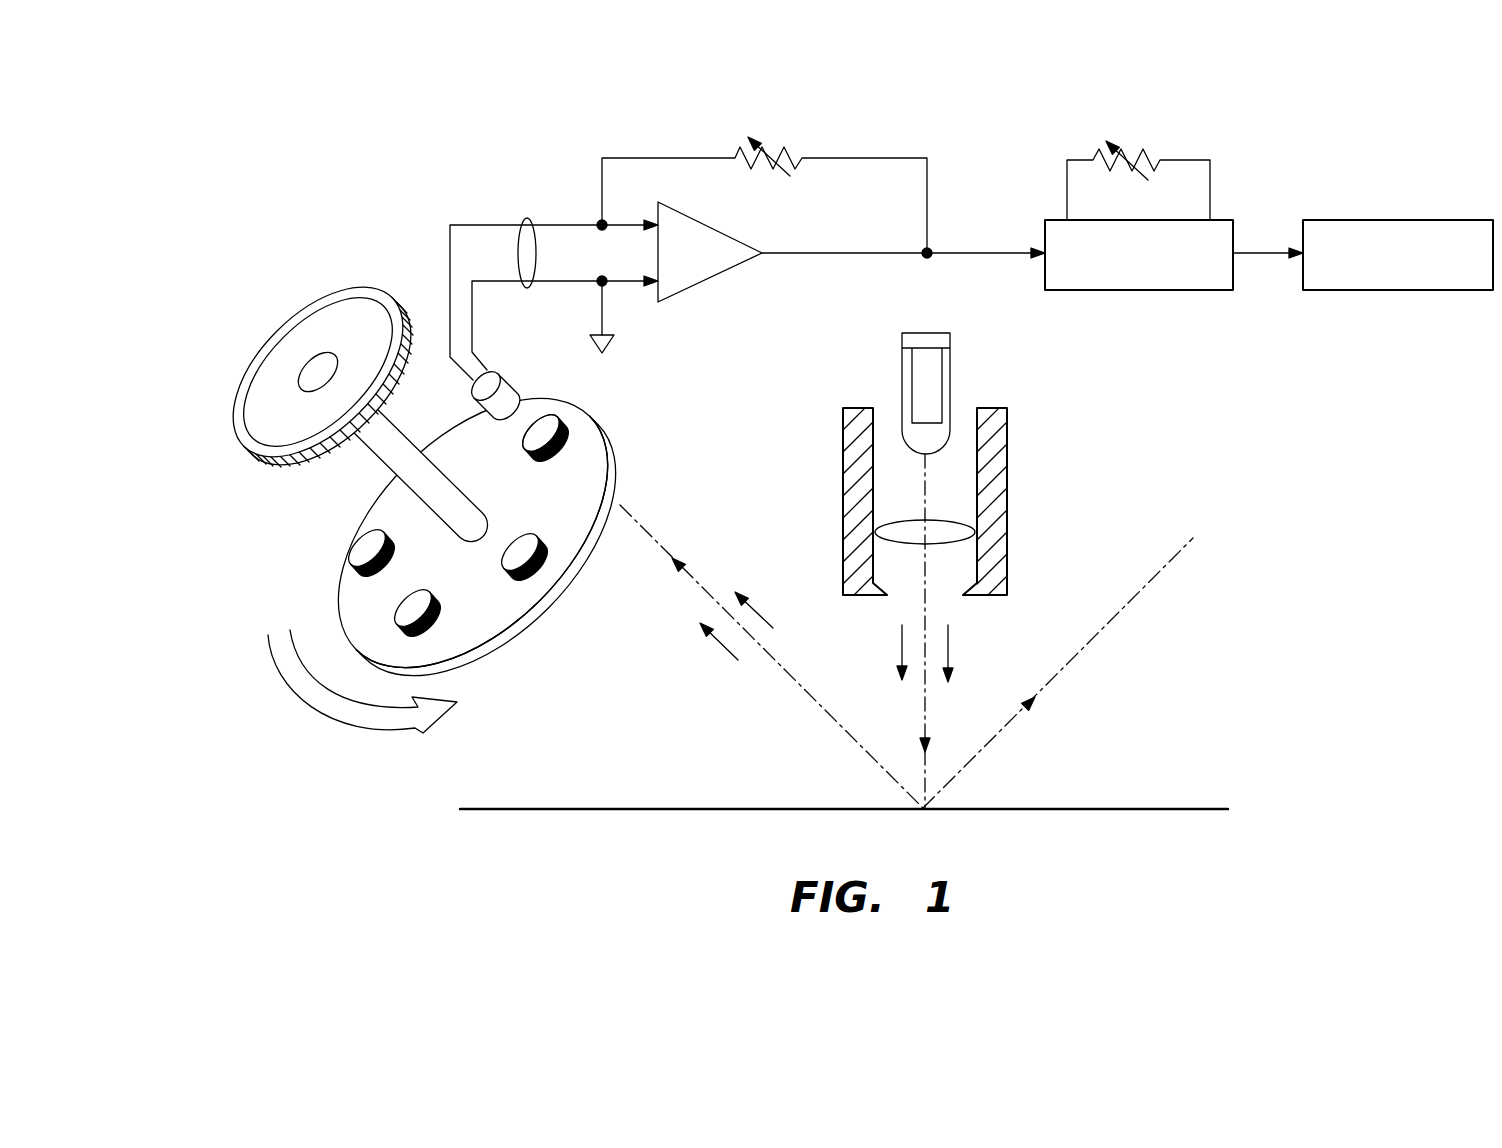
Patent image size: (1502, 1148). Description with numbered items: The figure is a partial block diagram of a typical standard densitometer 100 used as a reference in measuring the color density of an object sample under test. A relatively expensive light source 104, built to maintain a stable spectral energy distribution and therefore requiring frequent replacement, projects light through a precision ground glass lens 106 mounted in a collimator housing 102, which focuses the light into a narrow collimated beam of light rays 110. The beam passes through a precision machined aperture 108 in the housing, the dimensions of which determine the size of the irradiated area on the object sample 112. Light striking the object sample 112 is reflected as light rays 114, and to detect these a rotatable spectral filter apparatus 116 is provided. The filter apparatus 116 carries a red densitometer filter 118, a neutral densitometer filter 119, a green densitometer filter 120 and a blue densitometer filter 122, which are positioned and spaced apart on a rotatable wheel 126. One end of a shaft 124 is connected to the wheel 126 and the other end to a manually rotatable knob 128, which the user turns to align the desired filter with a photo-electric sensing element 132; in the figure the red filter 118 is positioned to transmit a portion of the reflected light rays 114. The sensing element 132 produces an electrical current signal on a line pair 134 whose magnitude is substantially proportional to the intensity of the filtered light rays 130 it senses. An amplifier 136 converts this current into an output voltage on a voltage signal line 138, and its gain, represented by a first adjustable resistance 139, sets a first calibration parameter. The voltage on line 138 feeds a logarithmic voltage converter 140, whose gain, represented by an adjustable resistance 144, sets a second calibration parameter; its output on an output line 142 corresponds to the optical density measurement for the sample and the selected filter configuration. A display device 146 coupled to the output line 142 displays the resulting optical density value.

The standard densitometer 100 is at (1160, 654).
The collimator housing 102 is at (1020, 452).
The light source 104 is at (940, 342).
The precision ground glass lens 106 is at (908, 537).
The precision machined aperture 108 is at (950, 594).
The collimated beam of light rays 110 is at (955, 658).
The object sample under test 112 is at (1082, 808).
The reflected light rays 114 is at (734, 655).
The rotatable spectral filter apparatus 116 is at (518, 642).
The red densitometer filter 118 is at (568, 437).
The neutral densitometer filter 119 is at (535, 575).
The green densitometer filter 120 is at (430, 623).
The blue densitometer filter 122 is at (357, 577).
The shaft 124 is at (387, 455).
The rotatable wheel 126 is at (628, 452).
The manually rotatable knob 128 is at (232, 403).
The light rays sensed by the photo-electric sensing element 130 is at (538, 430).
The photo-electric sensing element 132 is at (520, 392).
The line pair 134 is at (527, 218).
The amplifier 136 is at (688, 277).
The voltage signal line 138 is at (975, 247).
The first adjustable resistance 139 is at (803, 138).
The logarithmic voltage converter 140 is at (1197, 278).
The output line 142 is at (1267, 250).
The adjustable resistance 144 is at (1160, 137).
The display device 146 is at (1397, 220).